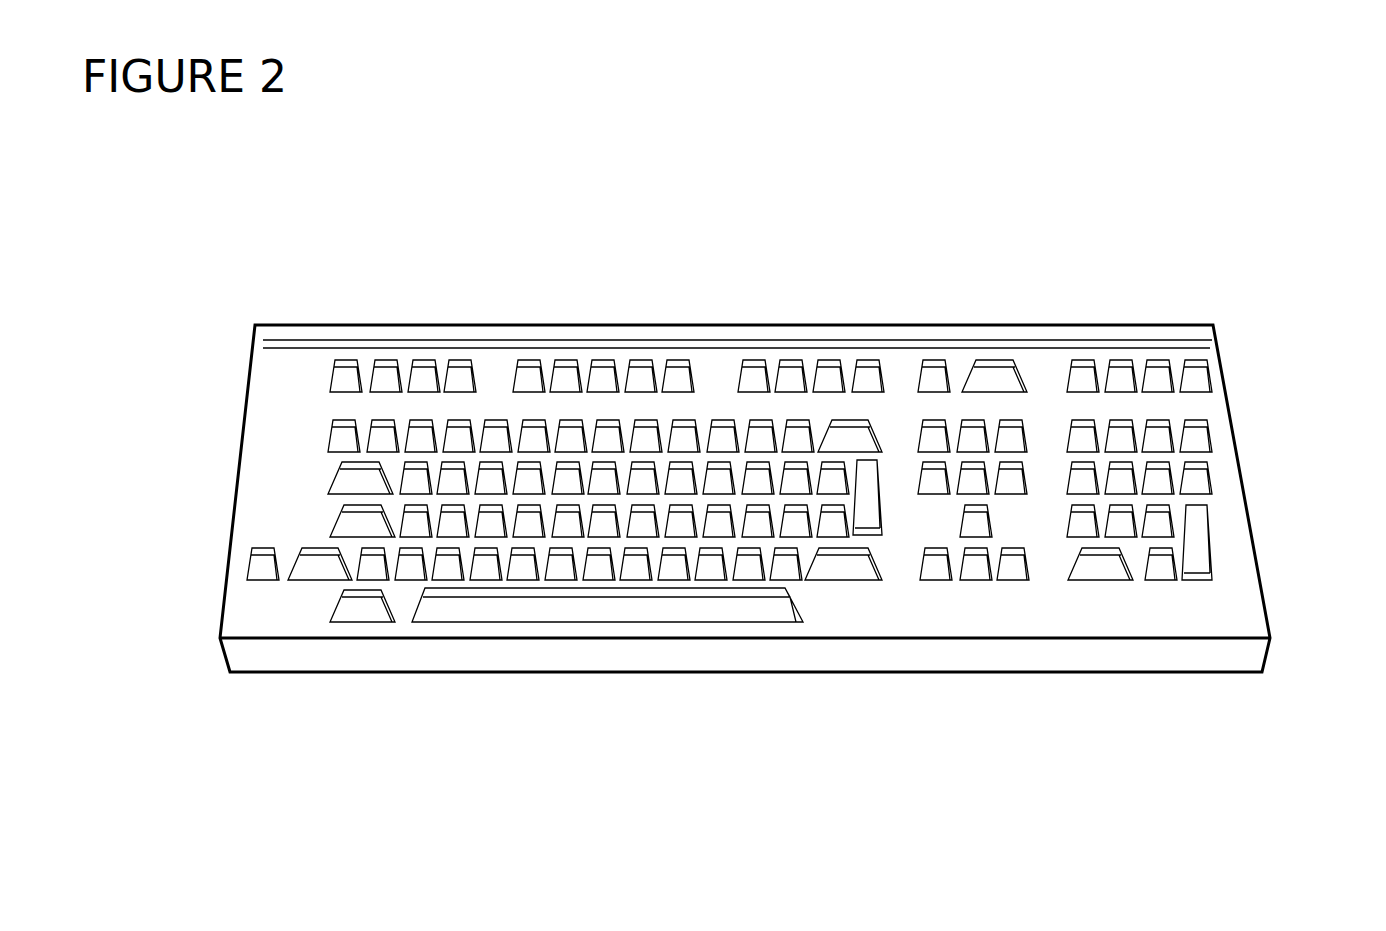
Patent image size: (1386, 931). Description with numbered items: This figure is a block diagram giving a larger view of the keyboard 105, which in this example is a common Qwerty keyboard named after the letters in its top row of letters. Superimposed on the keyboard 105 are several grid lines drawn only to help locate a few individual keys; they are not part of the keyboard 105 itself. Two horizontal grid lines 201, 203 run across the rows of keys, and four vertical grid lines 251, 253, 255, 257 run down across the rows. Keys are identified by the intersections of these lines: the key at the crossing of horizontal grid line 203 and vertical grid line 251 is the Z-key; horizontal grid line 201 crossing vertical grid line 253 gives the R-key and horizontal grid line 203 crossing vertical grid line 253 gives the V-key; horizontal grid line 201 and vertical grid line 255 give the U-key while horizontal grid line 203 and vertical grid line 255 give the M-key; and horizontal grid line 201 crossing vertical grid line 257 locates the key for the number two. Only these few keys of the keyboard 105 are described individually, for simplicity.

The keyboard 105 is at (790, 154).
The horizontal grid line 201 is at (1330, 480).
The horizontal grid line 203 is at (1330, 568).
The vertical grid line 251 is at (503, 742).
The vertical grid line 253 is at (613, 742).
The vertical grid line 255 is at (728, 742).
The vertical grid line 257 is at (1120, 745).